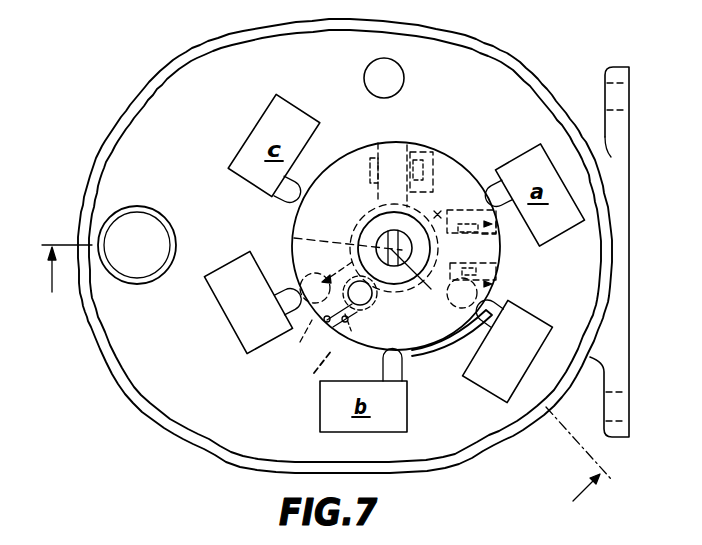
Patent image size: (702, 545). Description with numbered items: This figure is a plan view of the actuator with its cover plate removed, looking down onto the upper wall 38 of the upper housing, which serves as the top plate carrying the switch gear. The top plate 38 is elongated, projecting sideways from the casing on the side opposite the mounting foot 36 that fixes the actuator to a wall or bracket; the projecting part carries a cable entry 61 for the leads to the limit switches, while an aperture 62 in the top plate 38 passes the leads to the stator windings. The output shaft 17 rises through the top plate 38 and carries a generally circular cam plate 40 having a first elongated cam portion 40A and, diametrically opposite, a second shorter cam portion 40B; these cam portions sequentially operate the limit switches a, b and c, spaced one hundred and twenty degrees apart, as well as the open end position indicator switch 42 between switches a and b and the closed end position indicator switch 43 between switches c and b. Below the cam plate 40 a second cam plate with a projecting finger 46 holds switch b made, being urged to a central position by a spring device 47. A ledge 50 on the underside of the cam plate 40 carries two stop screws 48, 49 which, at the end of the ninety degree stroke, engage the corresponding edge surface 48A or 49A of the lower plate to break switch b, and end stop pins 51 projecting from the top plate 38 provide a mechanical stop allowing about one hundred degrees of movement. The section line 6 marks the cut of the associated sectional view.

The section line 6- 6 is at (331, 358).
The output shaft 17 is at (389, 264).
The mounting foot 36 is at (588, 144).
The upper wall 38 is at (178, 100).
The cam plate 40 is at (359, 163).
The first elongated cam portion 40A is at (424, 143).
The second shorter cam portion 40B is at (305, 321).
The open end position indicator switch 42 is at (521, 336).
The closed end position indicator switch 43 is at (248, 333).
The projecting finger 46 is at (377, 355).
The spring device 47 is at (311, 376).
The stop screw 48 is at (497, 237).
The edge surface 48A is at (437, 292).
The stop screw 49 is at (428, 152).
The edge surface 49A is at (322, 232).
The ledge 50 is at (437, 212).
The end stop pins 51 is at (296, 259).
The cable entry 61 is at (138, 283).
The aperture 62 is at (411, 63).